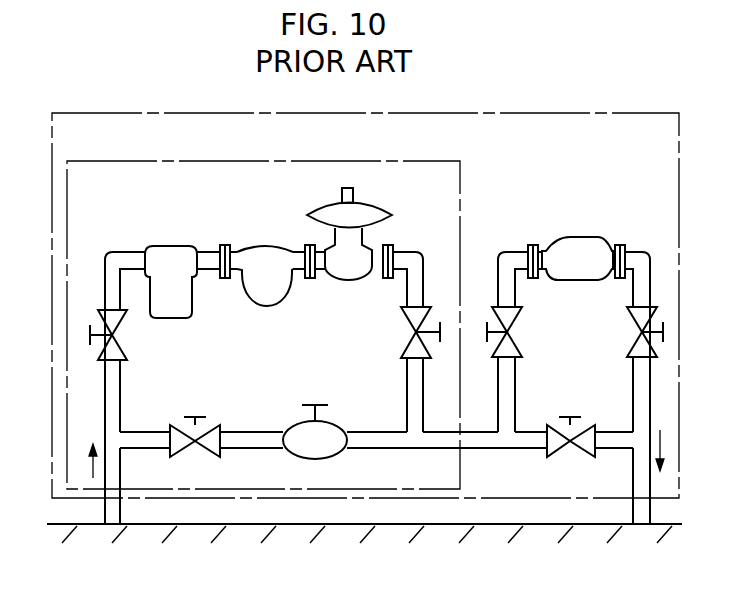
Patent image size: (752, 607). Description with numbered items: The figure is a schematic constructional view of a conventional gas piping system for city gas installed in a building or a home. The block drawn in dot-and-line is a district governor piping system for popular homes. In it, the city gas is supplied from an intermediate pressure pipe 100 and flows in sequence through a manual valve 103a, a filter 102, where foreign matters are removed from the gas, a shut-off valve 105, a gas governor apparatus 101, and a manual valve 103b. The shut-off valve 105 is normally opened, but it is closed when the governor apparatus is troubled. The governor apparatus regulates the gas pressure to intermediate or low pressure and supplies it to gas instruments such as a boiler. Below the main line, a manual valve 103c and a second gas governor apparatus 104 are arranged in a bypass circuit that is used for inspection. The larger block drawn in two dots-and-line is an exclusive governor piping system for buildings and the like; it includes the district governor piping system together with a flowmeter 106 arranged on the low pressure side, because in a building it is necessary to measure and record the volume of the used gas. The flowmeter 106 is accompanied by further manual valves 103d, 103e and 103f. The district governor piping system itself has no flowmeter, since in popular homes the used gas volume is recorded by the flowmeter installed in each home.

The intermediate pressure pipe 100 is at (122, 477).
The gas governor apparatus 101 is at (350, 240).
The filter 102 is at (168, 260).
The manual valve 103a is at (114, 350).
The manual valve 103b is at (414, 318).
The manual valve 103c is at (208, 433).
The manual valve 103d is at (510, 348).
The manual valve 103e is at (641, 318).
The manual valve 103f is at (586, 435).
The gas governor apparatus 104 is at (325, 432).
The shut-off valve 105 is at (265, 265).
The flowmeter 106 is at (577, 248).